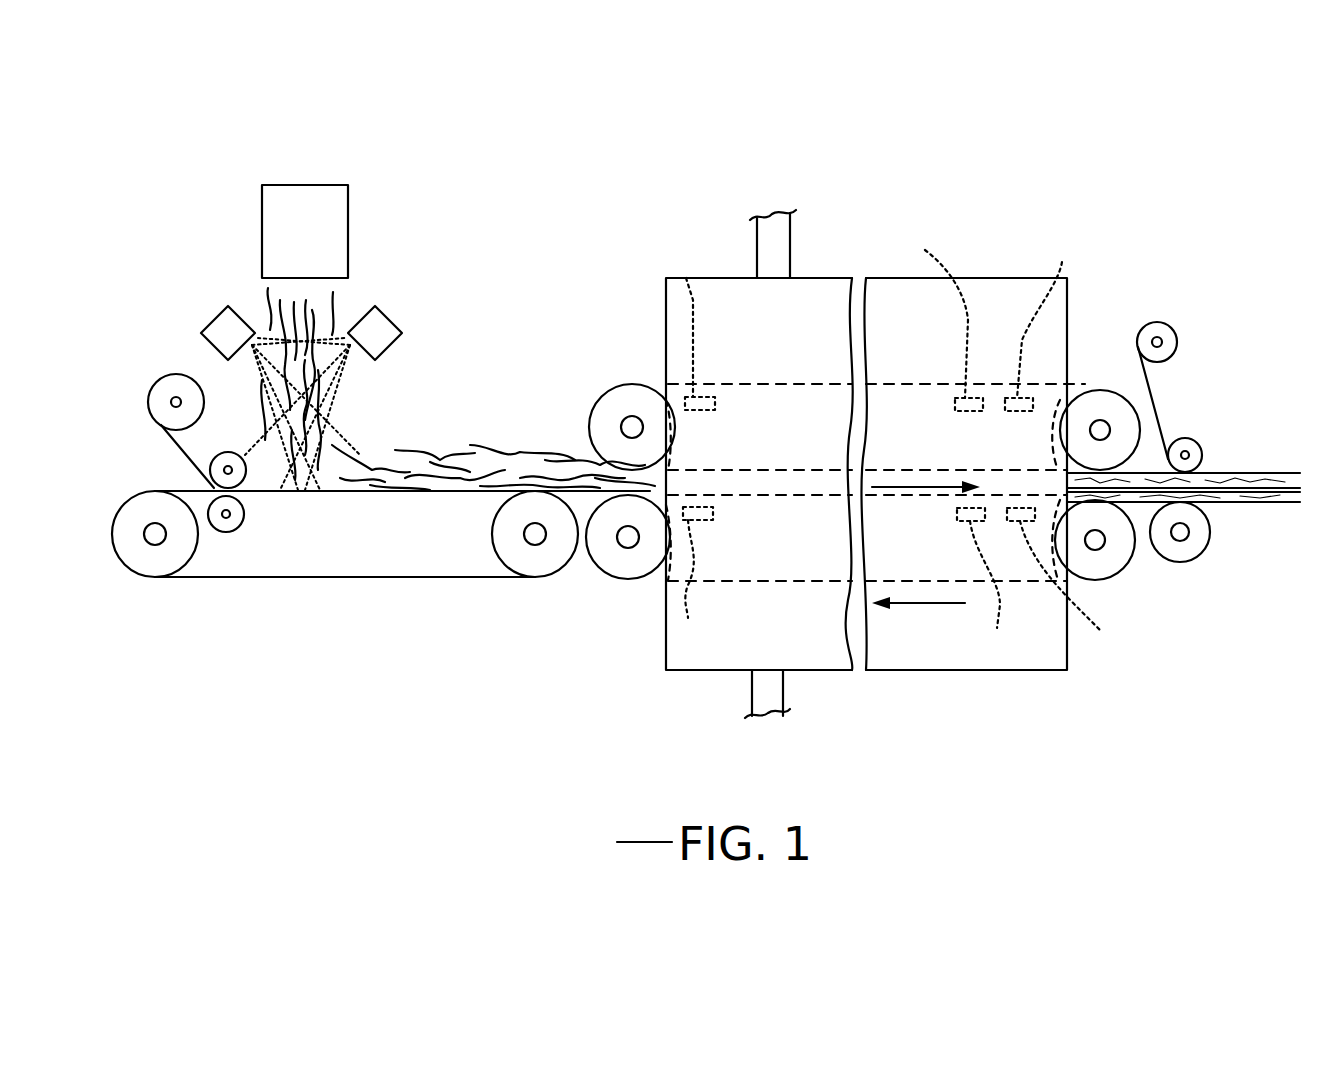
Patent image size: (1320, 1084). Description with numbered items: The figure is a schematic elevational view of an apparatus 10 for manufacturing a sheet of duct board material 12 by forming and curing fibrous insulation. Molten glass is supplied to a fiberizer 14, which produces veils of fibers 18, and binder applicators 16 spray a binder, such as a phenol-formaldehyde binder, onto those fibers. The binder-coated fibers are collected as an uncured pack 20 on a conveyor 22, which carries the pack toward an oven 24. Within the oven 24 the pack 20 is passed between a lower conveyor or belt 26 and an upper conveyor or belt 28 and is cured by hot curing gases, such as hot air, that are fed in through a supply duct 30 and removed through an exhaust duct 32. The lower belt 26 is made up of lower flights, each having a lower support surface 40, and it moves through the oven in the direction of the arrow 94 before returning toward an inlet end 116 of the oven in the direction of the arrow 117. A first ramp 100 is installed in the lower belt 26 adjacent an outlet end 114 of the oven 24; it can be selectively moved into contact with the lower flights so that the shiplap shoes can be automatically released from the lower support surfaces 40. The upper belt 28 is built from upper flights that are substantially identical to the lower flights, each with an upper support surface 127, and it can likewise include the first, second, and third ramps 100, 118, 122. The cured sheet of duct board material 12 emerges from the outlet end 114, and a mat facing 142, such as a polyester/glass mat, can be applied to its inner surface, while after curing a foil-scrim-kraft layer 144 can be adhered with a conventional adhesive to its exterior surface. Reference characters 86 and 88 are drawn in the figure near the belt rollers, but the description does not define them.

The apparatus 10 is at (470, 180).
The sheet of duct board material 12 is at (1270, 502).
The fiberizer 14 is at (276, 226).
The binder applicators 16 is at (392, 330).
The veils of fibers 18 is at (266, 306).
The pack 20 is at (465, 450).
The conveyor 22 is at (440, 578).
The oven 24 is at (992, 268).
The lower conveyor or belt 26 is at (626, 592).
The upper conveyor or belt 28 is at (617, 372).
The supply duct 30 is at (757, 255).
The exhaust duct 32 is at (783, 698).
The lower support surface 40 is at (752, 495).
The roller nip 86 is at (600, 576).
The lower exit roller 88 is at (1133, 556).
The arrow 94 is at (892, 487).
The first ramp 100 is at (1073, 443).
The outlet end 114 is at (1068, 308).
The inlet end 116 is at (664, 649).
The arrow 117 is at (928, 603).
The second ramp 118 is at (686, 278).
The third ramp 122 is at (957, 438).
The upper support surface 127 is at (708, 470).
The mat facing 142 is at (174, 446).
The foil-scrim-kraft layer 144 is at (1153, 398).